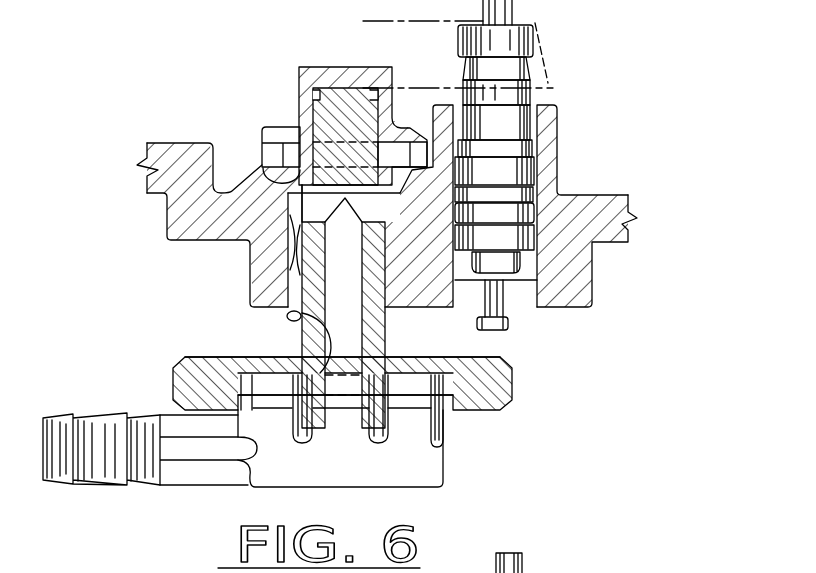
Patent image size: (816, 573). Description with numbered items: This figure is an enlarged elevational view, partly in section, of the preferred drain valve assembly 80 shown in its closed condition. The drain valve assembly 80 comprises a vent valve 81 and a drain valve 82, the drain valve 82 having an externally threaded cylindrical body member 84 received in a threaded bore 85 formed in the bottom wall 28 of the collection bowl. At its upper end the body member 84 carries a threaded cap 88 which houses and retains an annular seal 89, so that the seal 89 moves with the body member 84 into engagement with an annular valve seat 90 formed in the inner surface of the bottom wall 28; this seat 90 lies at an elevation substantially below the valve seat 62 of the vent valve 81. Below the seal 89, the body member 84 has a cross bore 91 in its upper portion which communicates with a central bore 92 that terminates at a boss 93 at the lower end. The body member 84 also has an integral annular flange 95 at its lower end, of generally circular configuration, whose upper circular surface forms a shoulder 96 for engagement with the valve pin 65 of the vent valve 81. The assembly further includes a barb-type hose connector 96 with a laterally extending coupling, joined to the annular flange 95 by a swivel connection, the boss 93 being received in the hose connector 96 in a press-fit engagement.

The bottom wall 28 is at (172, 143).
The valve seat 62 is at (524, 62).
The valve pin 65 is at (508, 323).
The drain valve assembly 80 is at (146, 517).
The vent valve 81 is at (530, 90).
The drain valve 82 is at (185, 372).
The body member 84 is at (385, 338).
The threaded bore 85 is at (290, 270).
The threaded cap 88 is at (312, 82).
The annular seal 89 is at (300, 140).
The annular valve seat 90 is at (270, 175).
The cross bore 91 is at (316, 212).
The central bore 92 is at (288, 318).
The boss 93 is at (318, 437).
The annular flange 95 is at (497, 383).
The hose connector 96 is at (98, 472).